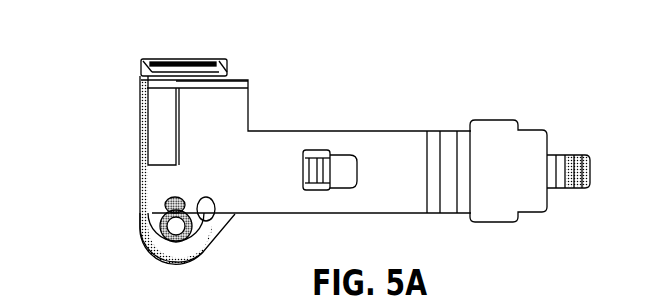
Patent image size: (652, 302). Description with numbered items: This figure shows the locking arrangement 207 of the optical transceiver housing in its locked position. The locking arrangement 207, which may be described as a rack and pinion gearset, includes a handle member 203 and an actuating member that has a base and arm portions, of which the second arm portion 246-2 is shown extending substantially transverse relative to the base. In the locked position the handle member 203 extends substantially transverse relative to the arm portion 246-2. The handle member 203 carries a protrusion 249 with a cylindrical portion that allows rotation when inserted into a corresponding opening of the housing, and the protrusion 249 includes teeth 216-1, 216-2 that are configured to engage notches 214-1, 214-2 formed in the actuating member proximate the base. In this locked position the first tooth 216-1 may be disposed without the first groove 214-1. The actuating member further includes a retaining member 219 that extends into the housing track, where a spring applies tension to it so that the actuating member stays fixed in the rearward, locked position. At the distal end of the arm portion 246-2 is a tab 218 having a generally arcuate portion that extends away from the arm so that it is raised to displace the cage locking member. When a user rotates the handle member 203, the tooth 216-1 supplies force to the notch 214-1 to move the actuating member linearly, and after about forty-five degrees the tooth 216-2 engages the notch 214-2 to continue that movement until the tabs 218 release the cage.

The handle member 203 is at (186, 60).
The locking arrangement 207 is at (350, 110).
The second arm portion 246-2 is at (507, 134).
The tab 218 is at (584, 187).
The retaining member 219 is at (324, 172).
The first tooth 216-1 is at (165, 193).
The second tooth 216-2 is at (204, 192).
The first notch 214-1 is at (154, 199).
The second notch 214-2 is at (208, 216).
The protrusion 249 is at (163, 243).